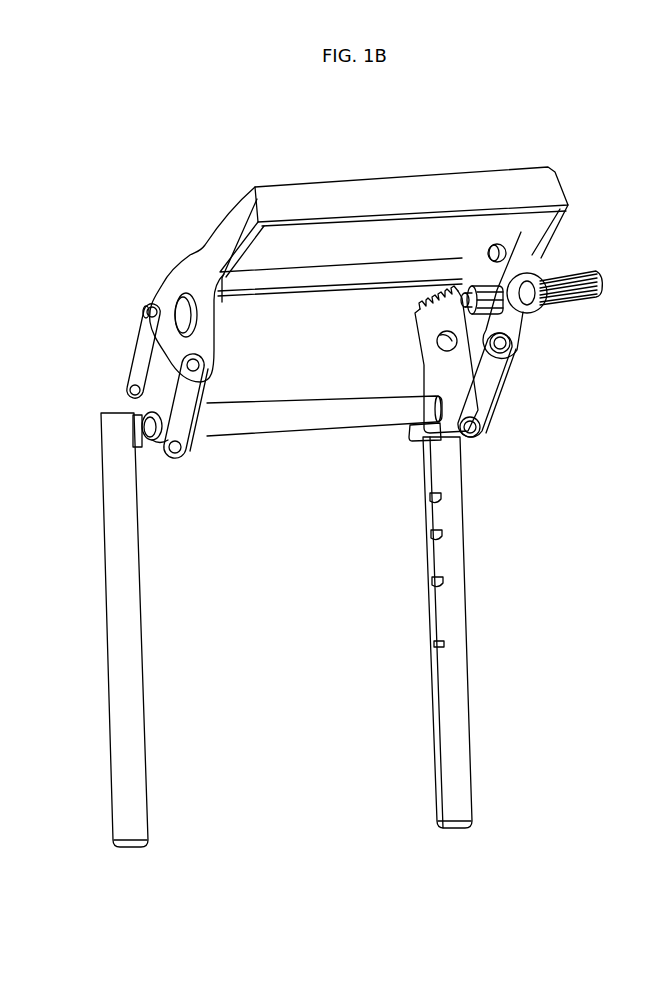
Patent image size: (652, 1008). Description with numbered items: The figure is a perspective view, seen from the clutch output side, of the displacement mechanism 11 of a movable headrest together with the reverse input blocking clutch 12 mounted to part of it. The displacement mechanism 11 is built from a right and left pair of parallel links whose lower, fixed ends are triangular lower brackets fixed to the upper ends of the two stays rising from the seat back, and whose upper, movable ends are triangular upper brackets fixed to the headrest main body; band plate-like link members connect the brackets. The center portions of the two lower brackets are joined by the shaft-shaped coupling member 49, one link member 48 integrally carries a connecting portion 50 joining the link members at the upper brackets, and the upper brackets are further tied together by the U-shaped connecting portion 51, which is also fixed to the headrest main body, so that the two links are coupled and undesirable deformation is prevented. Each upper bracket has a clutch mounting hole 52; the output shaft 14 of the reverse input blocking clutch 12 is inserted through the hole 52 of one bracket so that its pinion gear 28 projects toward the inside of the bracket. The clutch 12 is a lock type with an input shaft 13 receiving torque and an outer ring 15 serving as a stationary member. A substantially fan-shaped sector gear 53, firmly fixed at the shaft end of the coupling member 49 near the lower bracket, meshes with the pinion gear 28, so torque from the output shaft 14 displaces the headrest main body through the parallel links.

The displacement mechanism 11 is at (467, 150).
The U-shaped connecting portion 51 is at (374, 190).
The connecting portion 50 is at (332, 282).
The clutch mounting hole 52 is at (194, 318).
The link member 48 is at (142, 370).
The coupling member 49 is at (300, 425).
The sector gear 53 is at (428, 318).
The output shaft 14 is at (487, 290).
The pinion gear 28 is at (470, 294).
The outer ring 15 is at (541, 272).
The input shaft 13 is at (591, 283).
The reverse input blocking clutch 12 is at (586, 327).